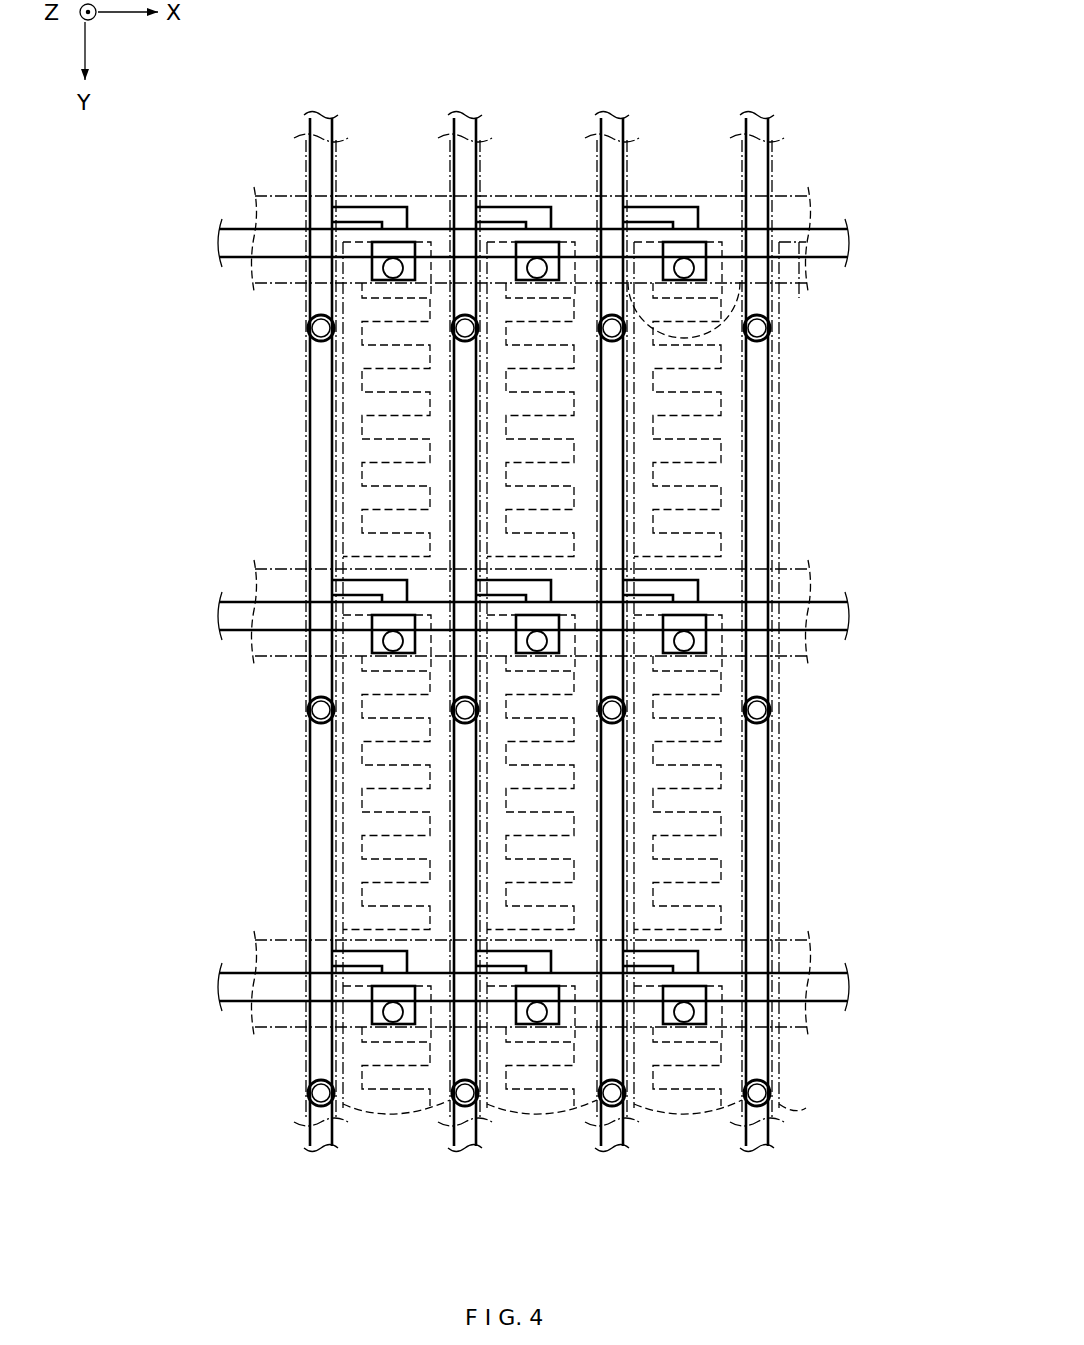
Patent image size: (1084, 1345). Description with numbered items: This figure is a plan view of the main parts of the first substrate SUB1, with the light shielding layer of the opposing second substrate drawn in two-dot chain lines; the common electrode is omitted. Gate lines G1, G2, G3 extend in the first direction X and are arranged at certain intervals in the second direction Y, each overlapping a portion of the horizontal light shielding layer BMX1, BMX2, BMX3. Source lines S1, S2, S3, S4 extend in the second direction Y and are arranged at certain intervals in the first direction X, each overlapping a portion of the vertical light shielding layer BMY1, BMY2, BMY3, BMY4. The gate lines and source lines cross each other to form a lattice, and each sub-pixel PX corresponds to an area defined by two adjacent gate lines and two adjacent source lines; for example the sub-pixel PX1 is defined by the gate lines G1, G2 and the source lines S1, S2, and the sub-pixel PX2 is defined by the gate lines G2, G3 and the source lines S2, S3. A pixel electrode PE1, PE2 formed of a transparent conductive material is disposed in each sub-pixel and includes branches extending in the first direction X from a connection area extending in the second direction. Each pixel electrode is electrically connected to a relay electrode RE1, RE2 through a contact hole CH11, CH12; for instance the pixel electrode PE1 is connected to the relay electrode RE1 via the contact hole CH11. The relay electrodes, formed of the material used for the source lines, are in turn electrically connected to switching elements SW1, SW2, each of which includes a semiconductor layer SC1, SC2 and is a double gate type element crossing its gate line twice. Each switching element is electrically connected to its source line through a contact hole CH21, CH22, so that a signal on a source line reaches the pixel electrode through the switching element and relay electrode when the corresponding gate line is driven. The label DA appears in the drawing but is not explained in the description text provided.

The first substrate SUB1 is at (880, 126).
The switching element SW1 is at (372, 195).
The switching element SW2 is at (545, 195).
The semiconductor layer SC1 is at (352, 215).
The semiconductor layer SC2 is at (517, 213).
The relay electrode RE1 is at (412, 242).
The relay electrode RE2 is at (560, 244).
The contact hole CH11 is at (385, 262).
The contact hole CH12 is at (547, 262).
The contact hole CH21 is at (307, 328).
The contact hole CH22 is at (452, 331).
The horizontal light shielding layer BMX1 is at (256, 216).
The horizontal light shielding layer BMX2 is at (258, 580).
The horizontal light shielding layer BMX3 is at (258, 950).
The vertical light shielding layer BMY1 is at (304, 1077).
The vertical light shielding layer BMY2 is at (453, 1083).
The vertical light shielding layer BMY3 is at (598, 1083).
The vertical light shielding layer BMY4 is at (743, 1083).
The gate line G1 is at (832, 243).
The gate line G2 is at (832, 616).
The gate line G3 is at (832, 987).
The source line S1 is at (319, 653).
The source line S2 is at (464, 653).
The source line S3 is at (609, 653).
The source line S4 is at (755, 653).
The pixel electrode PE1 is at (345, 406).
The pixel electrode PE2 is at (566, 452).
The sub-pixel PX1 is at (335, 518).
The sub-pixel PX2 is at (590, 406).
The sub-pixel PX is at (732, 494).
The display area DA is at (832, 667).